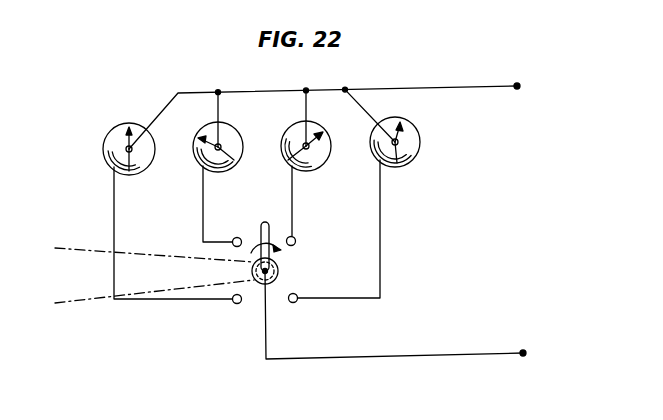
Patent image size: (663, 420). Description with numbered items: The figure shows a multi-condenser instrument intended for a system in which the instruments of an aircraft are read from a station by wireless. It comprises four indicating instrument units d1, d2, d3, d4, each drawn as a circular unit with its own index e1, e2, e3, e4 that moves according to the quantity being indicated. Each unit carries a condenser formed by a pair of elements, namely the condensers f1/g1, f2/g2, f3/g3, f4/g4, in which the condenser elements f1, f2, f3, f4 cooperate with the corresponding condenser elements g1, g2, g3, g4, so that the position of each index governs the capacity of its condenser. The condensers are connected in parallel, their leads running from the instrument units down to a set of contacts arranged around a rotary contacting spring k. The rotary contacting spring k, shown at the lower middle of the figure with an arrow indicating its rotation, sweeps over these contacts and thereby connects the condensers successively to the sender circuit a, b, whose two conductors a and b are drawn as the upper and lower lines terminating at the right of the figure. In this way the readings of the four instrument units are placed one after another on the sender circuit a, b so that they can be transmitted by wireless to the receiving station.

The sender circuit conductor a is at (337, 112).
The sender circuit conductor b is at (406, 317).
The rotary contacting spring k is at (270, 232).
The indicating instrument unit d1 is at (115, 130).
The indicating instrument unit d2 is at (202, 130).
The indicating instrument unit d3 is at (296, 127).
The indicating instrument unit d4 is at (414, 119).
The index e1 is at (140, 124).
The index e2 is at (218, 147).
The index e3 is at (321, 128).
The index e4 is at (401, 139).
The condenser element f1 is at (140, 172).
The condenser element f2 is at (232, 170).
The condenser element f3 is at (305, 172).
The condenser element f4 is at (403, 160).
The condenser element g1 is at (107, 158).
The condenser element g2 is at (198, 156).
The condenser element g3 is at (289, 157).
The condenser element g4 is at (369, 152).